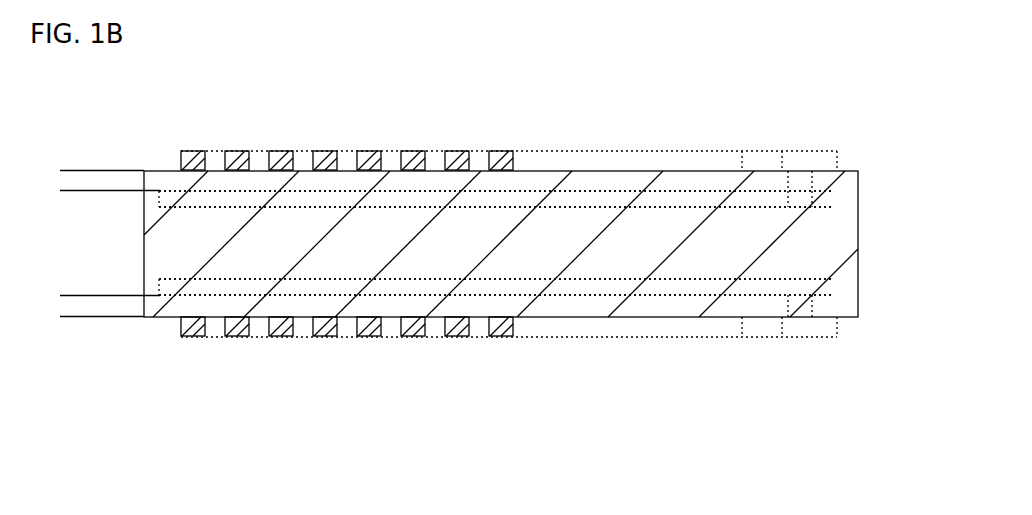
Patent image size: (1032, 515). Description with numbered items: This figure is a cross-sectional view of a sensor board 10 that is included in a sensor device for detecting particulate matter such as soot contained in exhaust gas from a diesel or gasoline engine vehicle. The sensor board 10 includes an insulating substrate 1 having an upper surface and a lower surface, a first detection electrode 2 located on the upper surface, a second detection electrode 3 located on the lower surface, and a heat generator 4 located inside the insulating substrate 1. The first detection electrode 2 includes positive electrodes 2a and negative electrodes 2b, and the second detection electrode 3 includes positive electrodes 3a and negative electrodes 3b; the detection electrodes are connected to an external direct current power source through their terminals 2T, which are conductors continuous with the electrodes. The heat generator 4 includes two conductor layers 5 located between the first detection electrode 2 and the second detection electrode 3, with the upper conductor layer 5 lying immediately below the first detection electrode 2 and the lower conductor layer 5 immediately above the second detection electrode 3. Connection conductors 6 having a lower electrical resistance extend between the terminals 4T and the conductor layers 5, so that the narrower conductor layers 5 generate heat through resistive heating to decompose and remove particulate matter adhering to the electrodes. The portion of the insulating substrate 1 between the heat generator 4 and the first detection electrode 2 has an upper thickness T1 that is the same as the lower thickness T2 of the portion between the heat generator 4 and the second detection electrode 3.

The sensor board 10 is at (164, 131).
The insulating substrate 1 is at (843, 183).
The first detection electrode 2 is at (509, 109).
The positive electrodes 2a is at (497, 152).
The negative electrodes 2b is at (453, 152).
The second detection electrode 3 is at (509, 387).
The positive electrodes 3a is at (500, 337).
The negative electrodes 3b is at (452, 337).
The heat generator 4 is at (495, 324).
The conductor layer 5 is at (205, 283).
The connection conductor 6 is at (670, 283).
The terminals 2T is at (763, 168).
The terminals 4T is at (792, 162).
The upper thickness T1 is at (93, 127).
The lower thickness T2 is at (93, 255).